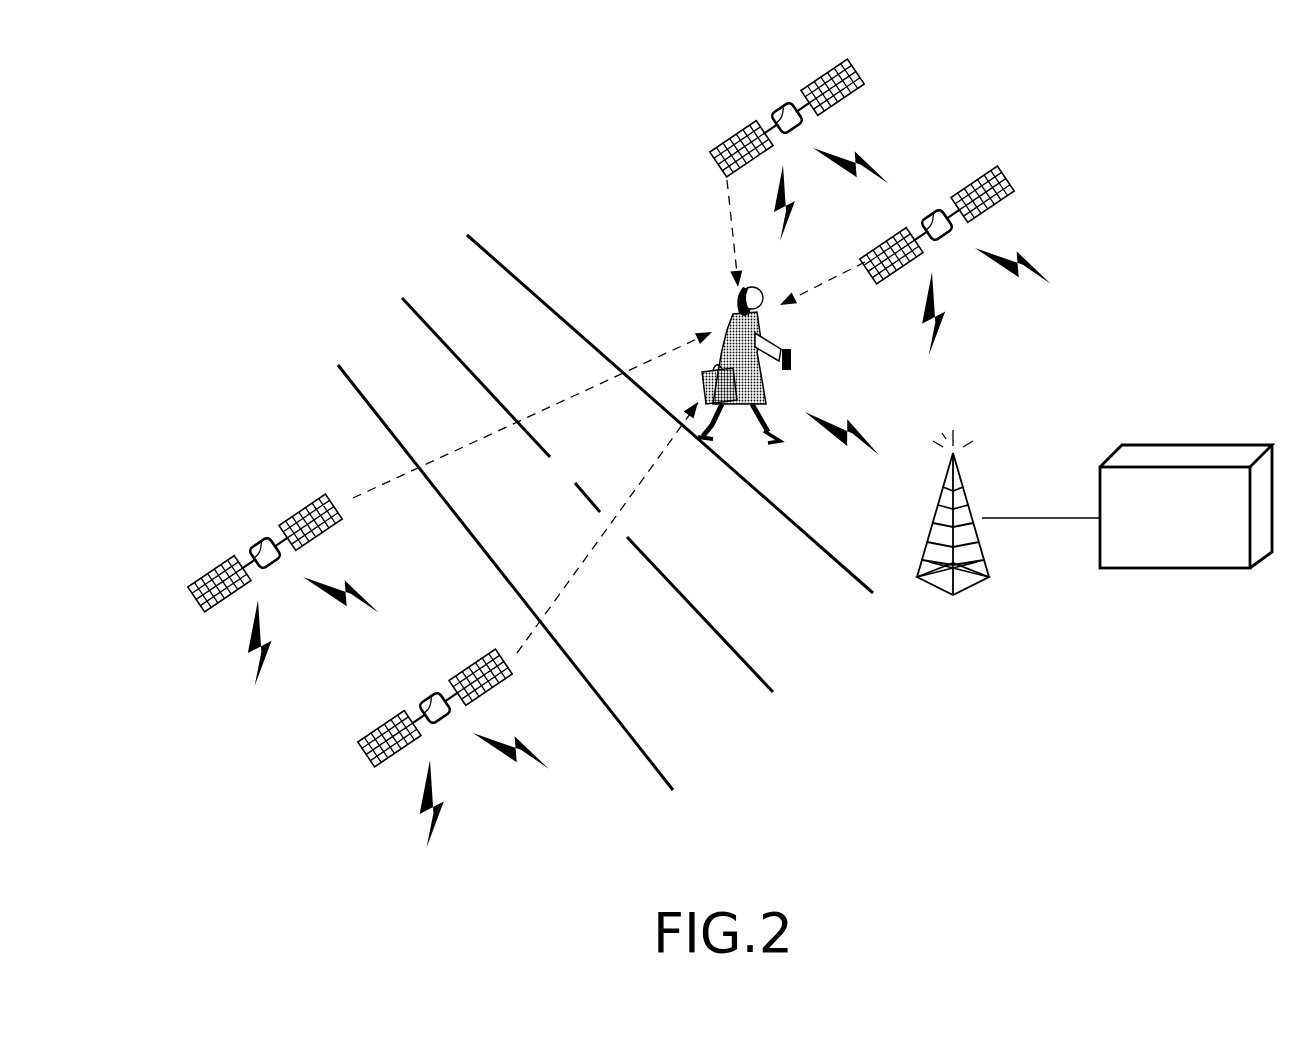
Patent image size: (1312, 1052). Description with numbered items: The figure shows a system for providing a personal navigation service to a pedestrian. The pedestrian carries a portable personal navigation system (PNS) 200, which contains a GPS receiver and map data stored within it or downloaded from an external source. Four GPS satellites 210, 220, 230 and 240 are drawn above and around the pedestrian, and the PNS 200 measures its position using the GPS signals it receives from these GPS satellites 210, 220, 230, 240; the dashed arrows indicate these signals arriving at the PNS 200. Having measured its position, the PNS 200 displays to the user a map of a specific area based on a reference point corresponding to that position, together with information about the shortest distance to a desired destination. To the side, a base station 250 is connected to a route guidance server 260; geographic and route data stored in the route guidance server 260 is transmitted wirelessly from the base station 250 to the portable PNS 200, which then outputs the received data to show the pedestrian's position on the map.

The portable personal navigation system (PNS) 200 is at (792, 357).
The GPS satellite 210 is at (778, 106).
The GPS satellite 220 is at (934, 212).
The GPS satellite 230 is at (255, 540).
The GPS satellite 240 is at (427, 695).
The base station 250 is at (972, 583).
The route guidance server 260 is at (1176, 572).